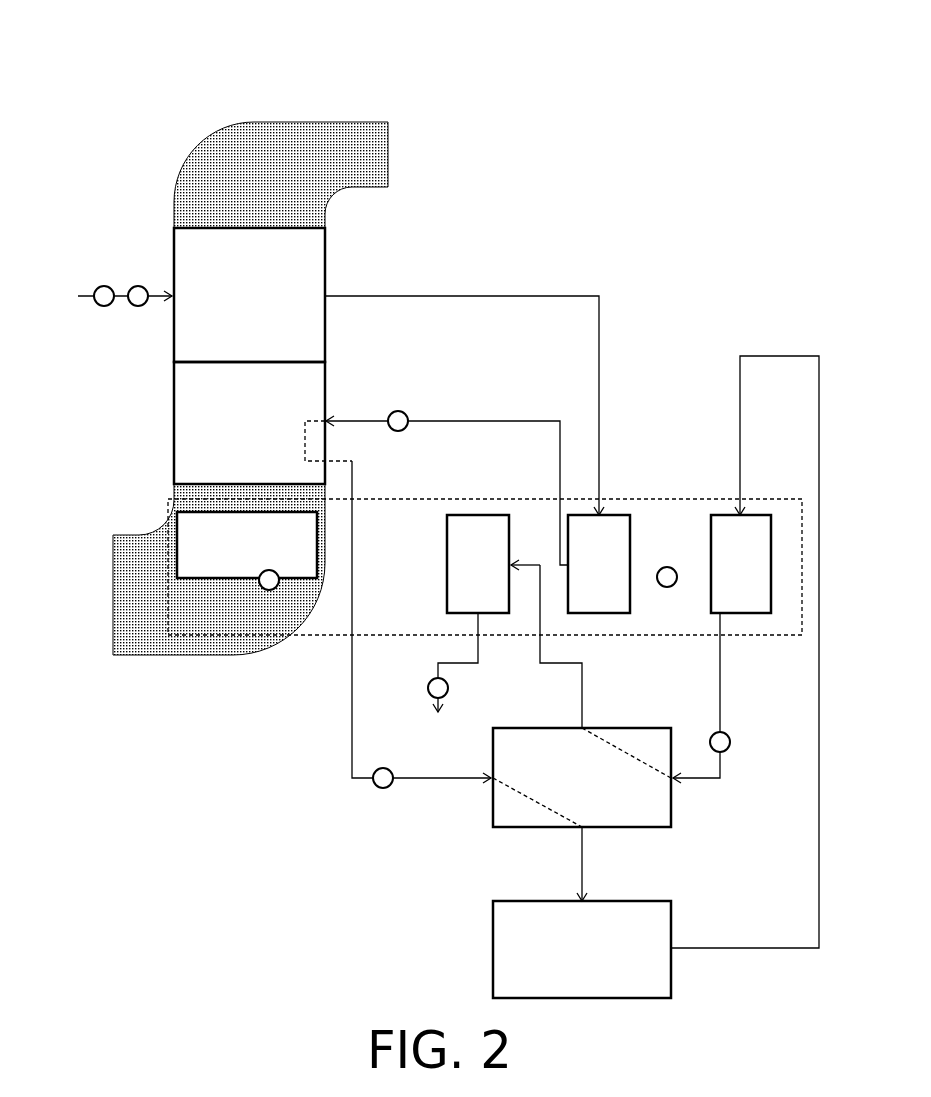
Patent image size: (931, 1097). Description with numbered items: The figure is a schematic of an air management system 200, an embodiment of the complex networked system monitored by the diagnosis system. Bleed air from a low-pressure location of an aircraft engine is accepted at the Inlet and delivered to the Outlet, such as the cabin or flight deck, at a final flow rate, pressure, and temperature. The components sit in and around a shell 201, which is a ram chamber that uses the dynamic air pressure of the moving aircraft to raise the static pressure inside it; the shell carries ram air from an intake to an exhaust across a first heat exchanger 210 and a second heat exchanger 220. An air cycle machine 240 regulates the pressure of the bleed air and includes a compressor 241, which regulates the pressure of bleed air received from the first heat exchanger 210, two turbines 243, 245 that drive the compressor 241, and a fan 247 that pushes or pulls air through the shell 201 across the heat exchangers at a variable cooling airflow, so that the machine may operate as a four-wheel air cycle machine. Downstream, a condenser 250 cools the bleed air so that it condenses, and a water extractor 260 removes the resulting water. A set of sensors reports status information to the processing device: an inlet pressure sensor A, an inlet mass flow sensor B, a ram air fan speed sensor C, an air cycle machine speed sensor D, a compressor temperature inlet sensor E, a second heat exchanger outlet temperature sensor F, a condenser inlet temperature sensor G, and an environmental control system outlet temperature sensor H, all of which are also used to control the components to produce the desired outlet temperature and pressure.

The air management system 200 is at (423, 504).
The shell 201 is at (228, 134).
The first heat exchanger 210 is at (249, 295).
The second heat exchanger 220 is at (263, 423).
The air cycle machine 240 is at (485, 567).
The compressor 241 is at (599, 564).
The turbine 243 is at (478, 564).
The turbine 245 is at (741, 564).
The fan 247 is at (247, 545).
The condenser 250 is at (582, 777).
The water extractor 260 is at (582, 949).
The inlet pressure sensor A is at (104, 285).
The inlet mass flow sensor B is at (140, 285).
The ram air fan speed sensor C is at (266, 590).
The air cycle machine speed sensor D is at (673, 568).
The compressor temperature inlet sensor E is at (389, 413).
The second heat exchanger outlet temperature sensor F is at (381, 789).
The condenser inlet temperature sensor G is at (727, 733).
The environmental control system outlet temperature sensor H is at (427, 679).